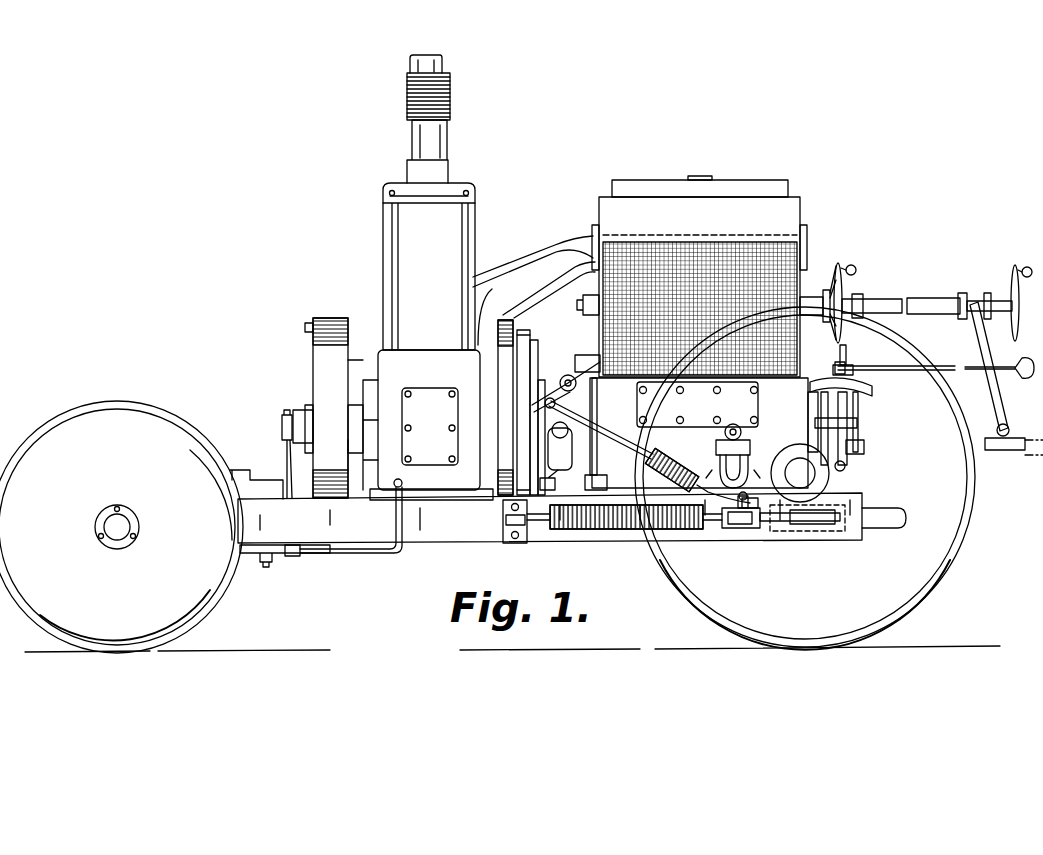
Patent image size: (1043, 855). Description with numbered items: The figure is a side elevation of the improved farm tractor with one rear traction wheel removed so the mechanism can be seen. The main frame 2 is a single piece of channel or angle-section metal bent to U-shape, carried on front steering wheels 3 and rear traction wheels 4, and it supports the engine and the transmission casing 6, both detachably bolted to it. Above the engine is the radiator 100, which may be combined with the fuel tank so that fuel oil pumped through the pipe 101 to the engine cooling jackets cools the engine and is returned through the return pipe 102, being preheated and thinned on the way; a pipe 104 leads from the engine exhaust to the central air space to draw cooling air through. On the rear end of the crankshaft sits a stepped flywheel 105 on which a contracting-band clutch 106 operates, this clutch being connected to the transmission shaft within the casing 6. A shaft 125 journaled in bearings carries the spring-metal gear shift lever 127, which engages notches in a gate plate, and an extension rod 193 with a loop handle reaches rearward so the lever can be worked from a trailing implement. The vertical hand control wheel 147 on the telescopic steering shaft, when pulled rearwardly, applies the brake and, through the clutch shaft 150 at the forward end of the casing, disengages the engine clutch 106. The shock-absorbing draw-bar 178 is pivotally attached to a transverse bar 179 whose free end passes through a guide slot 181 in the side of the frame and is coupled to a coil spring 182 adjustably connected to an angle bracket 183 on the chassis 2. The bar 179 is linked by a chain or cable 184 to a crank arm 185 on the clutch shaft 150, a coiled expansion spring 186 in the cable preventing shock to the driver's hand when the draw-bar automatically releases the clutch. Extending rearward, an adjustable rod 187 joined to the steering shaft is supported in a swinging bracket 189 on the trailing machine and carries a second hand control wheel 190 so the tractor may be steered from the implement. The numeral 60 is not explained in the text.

The main frame 2 is at (447, 538).
The front steering wheels 3 is at (121, 527).
The rear traction wheels 4 is at (805, 478).
The transmission casing 6 is at (700, 433).
The pipe 60 is at (422, 487).
The radiator 100 is at (802, 300).
The pipe 101 is at (592, 358).
The return pipe 102 is at (520, 248).
The pipe 104 is at (552, 262).
The flywheel 105 is at (514, 330).
The clutch 106 is at (558, 445).
The shaft 125 is at (846, 466).
The gear shift lever 127 is at (847, 360).
The hand control wheel 147 is at (843, 290).
The shaft 150 is at (572, 375).
The draw-bar 178 is at (888, 516).
The transverse bar 179 is at (772, 535).
The guide slot 181 is at (838, 535).
The coil spring 182 is at (684, 535).
The angle bracket 183 is at (523, 542).
The chain or cable 184 is at (616, 442).
The crank arm 185 is at (578, 396).
The coiled expansion spring 186 is at (672, 458).
The adjustable rod 187 is at (916, 302).
The swinging bracket 189 is at (992, 412).
The hand control wheel 190 is at (1006, 292).
The extension rod 193 is at (970, 358).